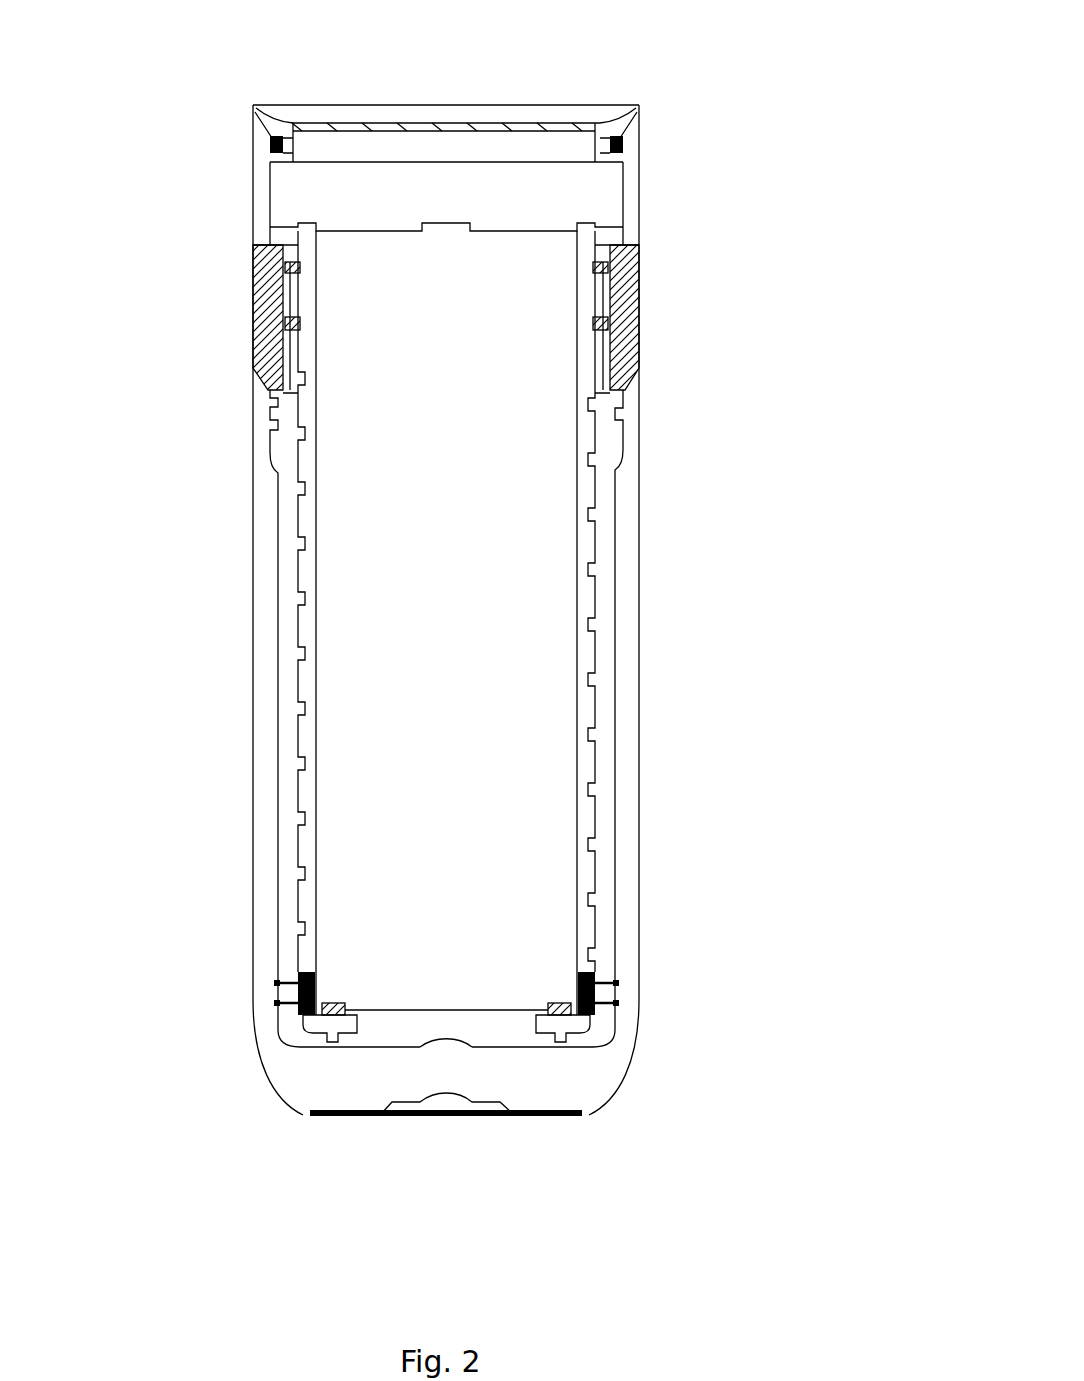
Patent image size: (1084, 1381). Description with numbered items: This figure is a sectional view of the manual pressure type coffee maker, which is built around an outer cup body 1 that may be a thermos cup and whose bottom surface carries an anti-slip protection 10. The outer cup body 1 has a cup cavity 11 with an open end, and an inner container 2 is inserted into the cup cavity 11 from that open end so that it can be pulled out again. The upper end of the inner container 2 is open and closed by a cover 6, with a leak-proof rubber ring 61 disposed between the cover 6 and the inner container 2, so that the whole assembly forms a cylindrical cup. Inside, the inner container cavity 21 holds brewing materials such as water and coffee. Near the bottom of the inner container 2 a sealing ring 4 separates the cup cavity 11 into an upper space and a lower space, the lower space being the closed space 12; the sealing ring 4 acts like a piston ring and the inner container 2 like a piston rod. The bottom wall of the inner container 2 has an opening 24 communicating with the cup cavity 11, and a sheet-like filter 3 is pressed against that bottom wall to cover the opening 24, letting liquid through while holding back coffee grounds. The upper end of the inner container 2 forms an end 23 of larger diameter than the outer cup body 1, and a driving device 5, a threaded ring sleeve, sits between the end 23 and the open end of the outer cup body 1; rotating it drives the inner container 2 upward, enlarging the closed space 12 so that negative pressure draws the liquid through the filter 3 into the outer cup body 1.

The outer cup body 1 is at (627, 597).
The inner container 2 is at (582, 540).
The filter 3 is at (502, 1010).
The sealing ring 4 is at (293, 985).
The driving device 5 is at (625, 308).
The cover 6 is at (633, 113).
The anti-slip protection 10 is at (310, 1117).
The cup cavity 11 is at (285, 745).
The closed space 12 is at (292, 1025).
The inner container cavity 21 is at (410, 662).
The end 23 is at (632, 192).
The opening 24 is at (449, 1018).
The leak-proof rubber ring 61 is at (272, 150).